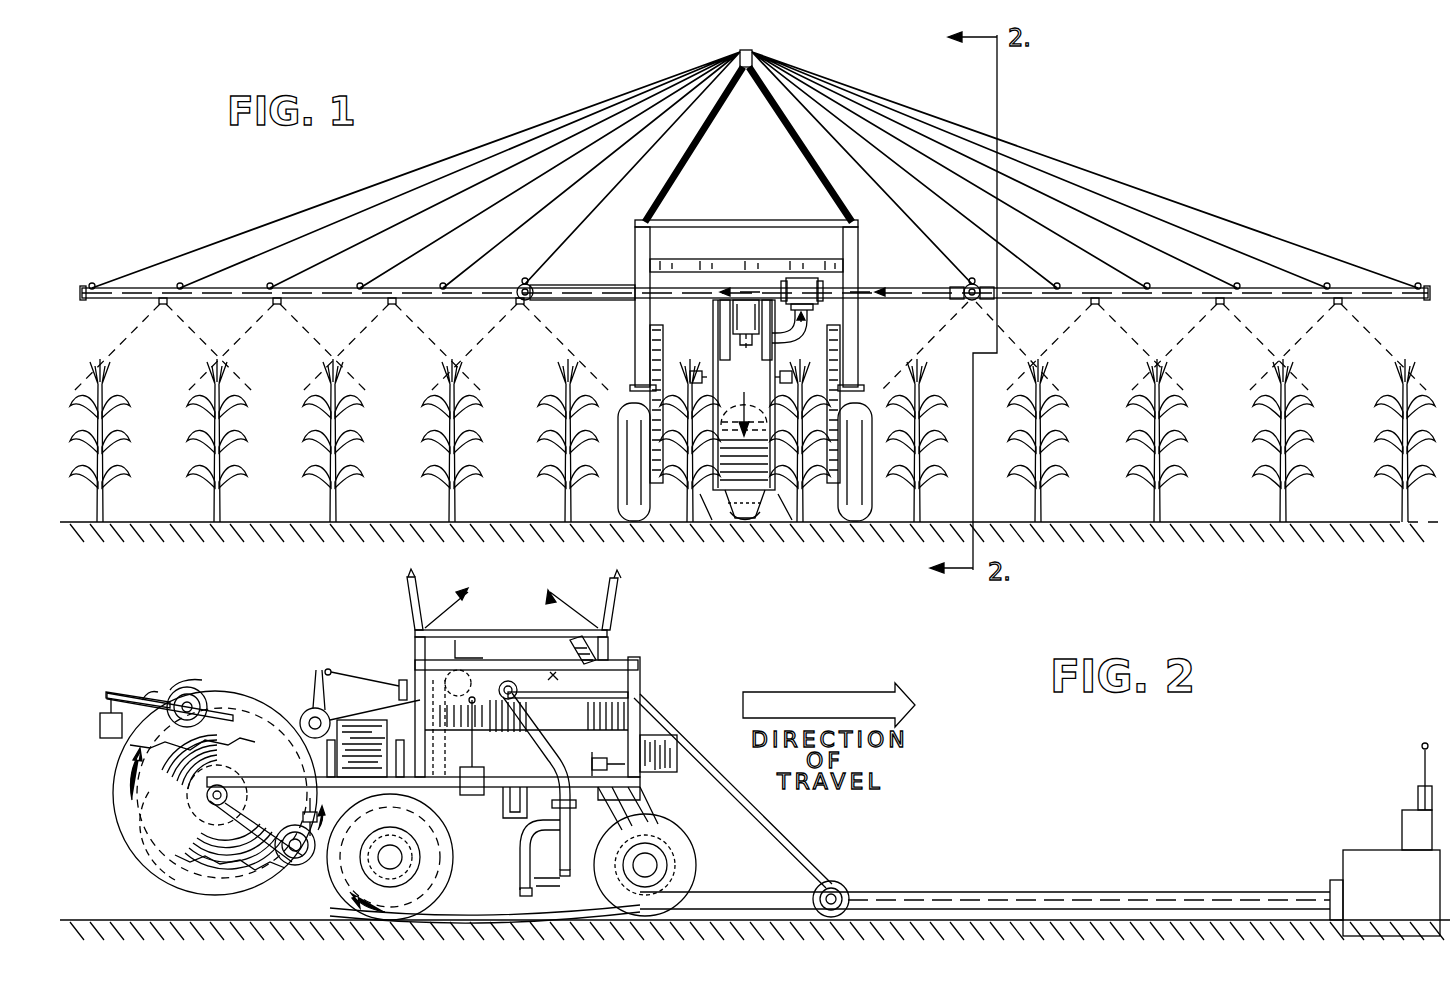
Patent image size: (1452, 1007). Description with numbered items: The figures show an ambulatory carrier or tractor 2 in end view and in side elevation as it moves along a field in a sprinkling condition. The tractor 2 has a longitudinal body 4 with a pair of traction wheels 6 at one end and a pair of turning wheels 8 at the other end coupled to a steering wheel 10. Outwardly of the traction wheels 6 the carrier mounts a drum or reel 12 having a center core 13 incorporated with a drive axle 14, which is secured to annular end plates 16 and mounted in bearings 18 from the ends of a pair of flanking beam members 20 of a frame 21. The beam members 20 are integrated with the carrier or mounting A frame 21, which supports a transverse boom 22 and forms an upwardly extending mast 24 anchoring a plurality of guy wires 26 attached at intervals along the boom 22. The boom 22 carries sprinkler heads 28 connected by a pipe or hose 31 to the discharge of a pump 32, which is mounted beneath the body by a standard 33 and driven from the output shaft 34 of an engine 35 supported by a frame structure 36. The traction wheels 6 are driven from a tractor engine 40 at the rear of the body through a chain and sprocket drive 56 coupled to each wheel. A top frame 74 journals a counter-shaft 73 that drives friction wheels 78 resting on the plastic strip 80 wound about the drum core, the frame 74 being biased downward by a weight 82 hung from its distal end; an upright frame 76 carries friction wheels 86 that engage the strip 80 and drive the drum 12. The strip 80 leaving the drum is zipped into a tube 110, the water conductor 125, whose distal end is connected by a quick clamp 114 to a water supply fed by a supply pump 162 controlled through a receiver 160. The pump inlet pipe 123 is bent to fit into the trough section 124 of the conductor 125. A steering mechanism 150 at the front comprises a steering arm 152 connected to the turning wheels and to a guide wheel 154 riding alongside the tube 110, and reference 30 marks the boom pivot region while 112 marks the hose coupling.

In FIG. 1, the ambulatory carrier or tractor 2 is at (851, 524).
In FIG. 2, the ambulatory carrier or tractor 2 is at (640, 658).
In FIG. 2, the longitudinal body 4 is at (470, 726).
In FIG. 1, the traction wheels 6 is at (626, 492).
In FIG. 2, the traction wheels 6 is at (454, 860).
In FIG. 2, the turning wheels 8 is at (678, 850).
In FIG. 2, the steering wheel 10 is at (540, 632).
In FIG. 1, the drum or reel 12 is at (711, 498).
In FIG. 2, the drum or reel 12 is at (242, 698).
In FIG. 2, the center core 13 is at (128, 762).
In FIG. 2, the drive axle 14 is at (178, 840).
In FIG. 1, the annular end plates 16 is at (712, 498).
In FIG. 2, the annular end plates 16 is at (222, 698).
In FIG. 2, the bearings 18 is at (232, 845).
In FIG. 1, the beam members 20 is at (697, 370).
In FIG. 2, the beam members 20 is at (236, 792).
In FIG. 1, the carrier or mounting A frame 21 is at (866, 221).
In FIG. 2, the carrier or mounting A frame 21 is at (612, 654).
In FIG. 1, the transverse boom 22 is at (598, 286).
In FIG. 2, the transverse boom 22 is at (498, 688).
In FIG. 1, the mast 24 is at (781, 112).
In FIG. 2, the mast 24 is at (402, 602).
In FIG. 1, the guy wires 26 is at (1118, 172).
In FIG. 1, the sprinkler heads 28 is at (1338, 305).
In FIG. 1, the boom pivot / valve 30 is at (802, 288).
In FIG. 2, the boom pivot / valve 30 is at (504, 700).
In FIG. 1, the pipe or hose 31 is at (812, 326).
In FIG. 2, the pipe or hose 31 is at (544, 744).
In FIG. 2, the pump 32 is at (546, 836).
In FIG. 2, the standard 33 is at (600, 797).
In FIG. 2, the output shaft 34 is at (620, 762).
In FIG. 2, the engine 35 is at (668, 740).
In FIG. 2, the frame structure 36 is at (655, 826).
In FIG. 2, the tractor engine 40 is at (357, 745).
In FIG. 2, the chain and sprocket drive 56 is at (418, 806).
In FIG. 2, the counter-shaft 73 is at (188, 700).
In FIG. 2, the top frame 74 is at (122, 694).
In FIG. 2, the upright frame 76 is at (317, 824).
In FIG. 1, the friction wheels 78 is at (734, 314).
In FIG. 2, the friction wheels 78 is at (174, 694).
In FIG. 1, the plastic strip 80 is at (762, 388).
In FIG. 2, the plastic strip 80 is at (208, 855).
In FIG. 1, the weight 82 is at (741, 348).
In FIG. 2, the weight 82 is at (100, 730).
In FIG. 2, the friction wheels 86 is at (298, 865).
In FIG. 2, the tube 110 is at (1165, 890).
In FIG. 2, the hose coupling 112 is at (1328, 874).
In FIG. 2, the quick clamp 114 is at (1348, 850).
In FIG. 2, the inlet pipe 123 is at (535, 875).
In FIG. 2, the trough section 124 is at (478, 912).
In FIG. 2, the water conductor 125 is at (1030, 886).
In FIG. 2, the steering mechanism 150 is at (810, 864).
In FIG. 2, the steering arm 152 is at (772, 818).
In FIG. 2, the guide wheel 154 is at (848, 884).
In FIG. 2, the receiver 160 is at (1418, 792).
In FIG. 2, the supply pump 162 is at (1408, 808).